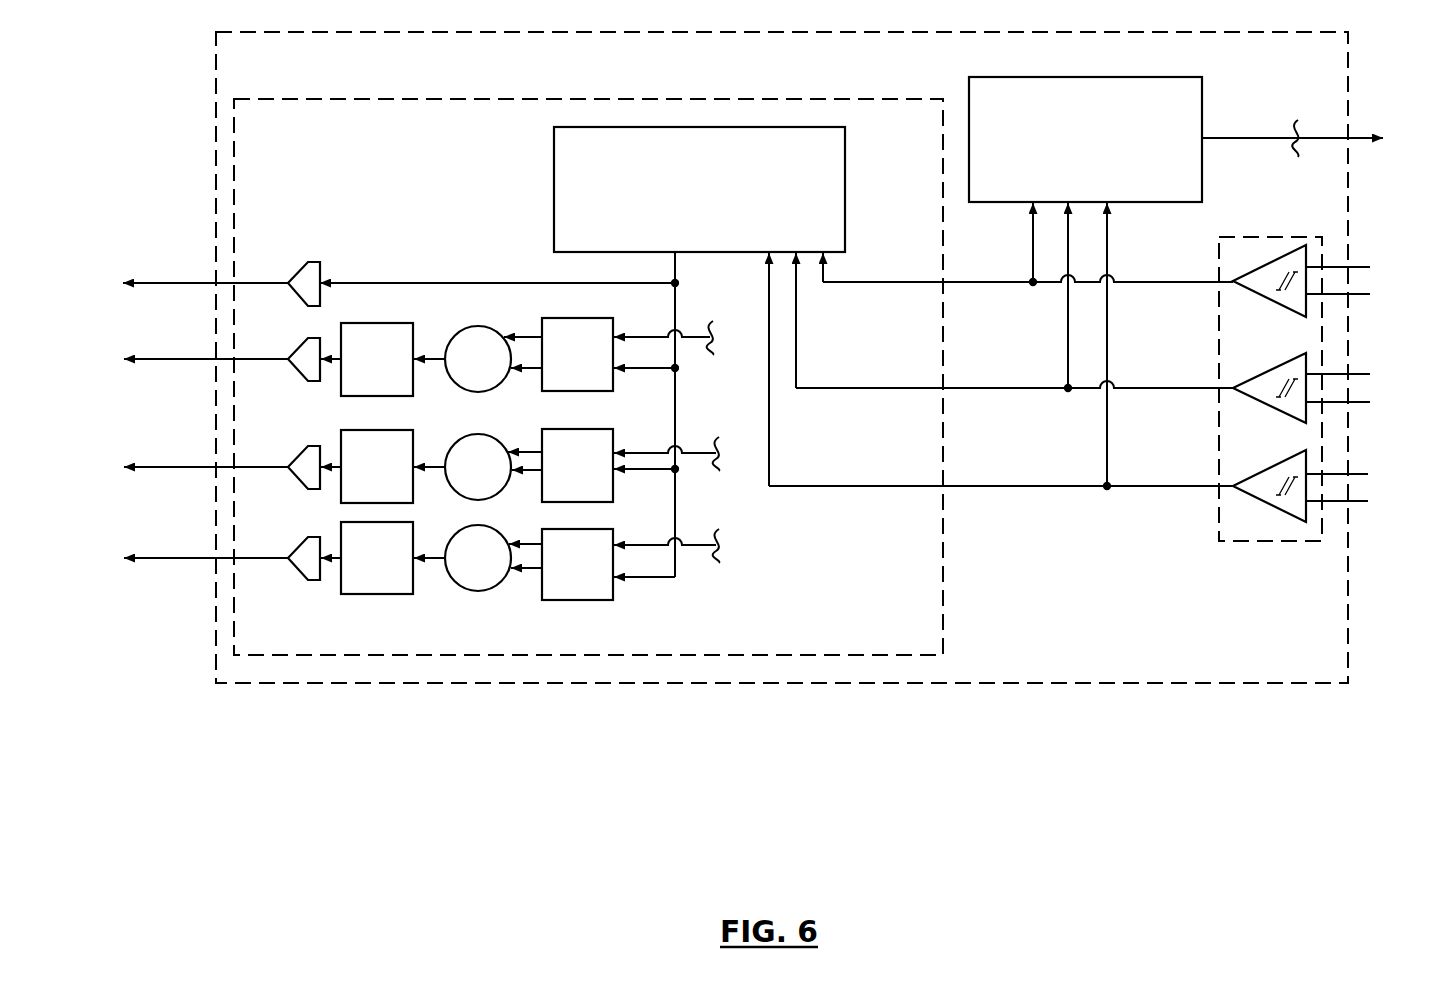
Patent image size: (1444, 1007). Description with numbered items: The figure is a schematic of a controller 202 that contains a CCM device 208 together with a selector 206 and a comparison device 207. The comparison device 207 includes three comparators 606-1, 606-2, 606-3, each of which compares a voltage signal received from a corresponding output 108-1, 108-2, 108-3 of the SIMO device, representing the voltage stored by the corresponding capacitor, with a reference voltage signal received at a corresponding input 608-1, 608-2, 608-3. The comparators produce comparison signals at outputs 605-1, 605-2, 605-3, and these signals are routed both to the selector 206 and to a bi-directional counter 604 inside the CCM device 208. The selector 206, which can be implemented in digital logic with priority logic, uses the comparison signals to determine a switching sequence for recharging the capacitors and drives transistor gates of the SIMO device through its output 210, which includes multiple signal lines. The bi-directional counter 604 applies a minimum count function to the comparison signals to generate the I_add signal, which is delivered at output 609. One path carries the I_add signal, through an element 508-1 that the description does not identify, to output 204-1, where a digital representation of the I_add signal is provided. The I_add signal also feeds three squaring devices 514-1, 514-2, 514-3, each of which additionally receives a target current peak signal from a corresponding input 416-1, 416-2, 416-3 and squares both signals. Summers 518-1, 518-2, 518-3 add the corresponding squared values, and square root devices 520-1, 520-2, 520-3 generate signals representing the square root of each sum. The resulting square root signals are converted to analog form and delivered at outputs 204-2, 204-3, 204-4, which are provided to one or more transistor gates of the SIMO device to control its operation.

The controller 202 is at (782, 357).
The CCM device 208 is at (588, 377).
The comparison device 207 is at (1219, 523).
The bi-directional counter 604 is at (845, 191).
The selector 206 is at (1095, 77).
The output 210 is at (1241, 138).
The output 609 is at (675, 273).
The output buffer 508-1 is at (322, 266).
The output 204-1 is at (192, 283).
The output 204-2 is at (195, 359).
The output 204-3 is at (195, 467).
The output 204-4 is at (193, 558).
The square root device 520-1 is at (370, 323).
The square root device 520-2 is at (370, 430).
The square root device 520-3 is at (357, 594).
The summer 518-1 is at (480, 326).
The summer 518-2 is at (480, 434).
The summer 518-3 is at (475, 591).
The squaring device 514-1 is at (580, 318).
The squaring device 514-2 is at (580, 429).
The squaring device 514-3 is at (585, 600).
The input 416-1 is at (688, 338).
The input 416-2 is at (697, 453).
The input 416-3 is at (698, 545).
The output 605-1 is at (840, 282).
The output 605-2 is at (838, 388).
The output 605-3 is at (838, 486).
The comparator 606-1 is at (1270, 262).
The comparator 606-2 is at (1272, 369).
The comparator 606-3 is at (1274, 466).
The output 108-1 is at (1350, 267).
The output 108-2 is at (1350, 374).
The output 108-3 is at (1343, 474).
The input 608-1 is at (1350, 294).
The input 608-2 is at (1350, 402).
The input 608-3 is at (1340, 501).